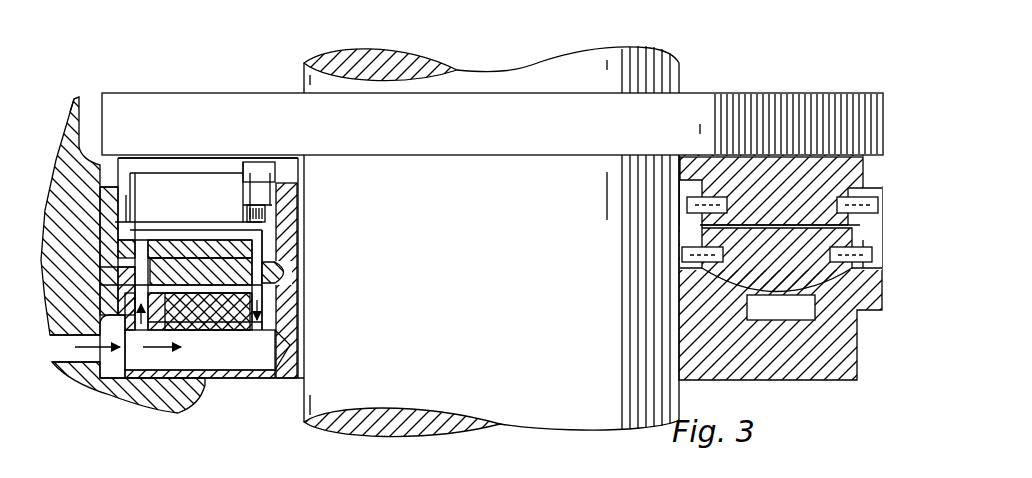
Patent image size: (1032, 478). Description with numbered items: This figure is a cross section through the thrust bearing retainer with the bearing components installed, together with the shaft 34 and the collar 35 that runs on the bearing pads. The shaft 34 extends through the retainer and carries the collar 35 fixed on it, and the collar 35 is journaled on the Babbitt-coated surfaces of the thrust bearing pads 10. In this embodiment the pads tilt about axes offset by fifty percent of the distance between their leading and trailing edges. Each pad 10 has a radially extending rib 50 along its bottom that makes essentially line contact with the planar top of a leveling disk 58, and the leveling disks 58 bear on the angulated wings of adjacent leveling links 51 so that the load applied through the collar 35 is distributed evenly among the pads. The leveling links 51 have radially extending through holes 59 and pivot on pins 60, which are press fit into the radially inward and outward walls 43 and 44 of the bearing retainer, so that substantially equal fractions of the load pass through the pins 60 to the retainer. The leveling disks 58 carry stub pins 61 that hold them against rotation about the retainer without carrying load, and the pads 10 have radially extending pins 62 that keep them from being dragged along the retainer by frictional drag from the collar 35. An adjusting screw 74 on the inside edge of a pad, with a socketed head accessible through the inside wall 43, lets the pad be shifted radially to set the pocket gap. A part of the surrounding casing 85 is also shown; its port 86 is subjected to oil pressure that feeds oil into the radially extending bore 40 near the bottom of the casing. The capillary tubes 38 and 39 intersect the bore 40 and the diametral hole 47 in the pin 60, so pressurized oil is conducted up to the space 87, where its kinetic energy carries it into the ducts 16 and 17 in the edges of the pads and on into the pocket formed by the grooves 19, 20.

The thrust bearing pad 10 is at (833, 177).
The duct 16 is at (258, 185).
The duct 17 is at (138, 212).
The trailing edge pocket groove 19 is at (200, 165).
The leading edge pocket groove 20 is at (186, 145).
The shaft 34 is at (525, 403).
The collar 35 is at (752, 103).
The capillary hole 38 is at (133, 298).
The capillary hole 39 is at (272, 318).
The radial hole 40 is at (140, 268).
The inside wall 43 is at (285, 258).
The outside wall 44 is at (102, 211).
The diametral hole 47 is at (268, 272).
The rib 50 is at (262, 231).
The leveling link 51 is at (176, 248).
The leveling disk 58 is at (835, 282).
The through hole 59 is at (207, 350).
The pin 60 is at (258, 305).
The stub pin 61 is at (845, 253).
The pin 62 is at (842, 208).
The screw 74 is at (300, 192).
The casing 85 is at (74, 106).
The port 86 is at (88, 352).
The space 87 is at (232, 240).